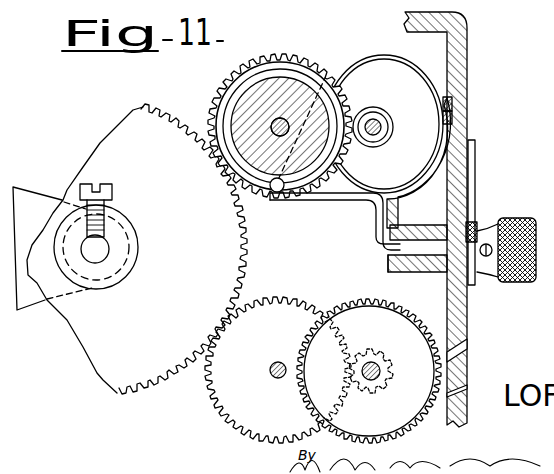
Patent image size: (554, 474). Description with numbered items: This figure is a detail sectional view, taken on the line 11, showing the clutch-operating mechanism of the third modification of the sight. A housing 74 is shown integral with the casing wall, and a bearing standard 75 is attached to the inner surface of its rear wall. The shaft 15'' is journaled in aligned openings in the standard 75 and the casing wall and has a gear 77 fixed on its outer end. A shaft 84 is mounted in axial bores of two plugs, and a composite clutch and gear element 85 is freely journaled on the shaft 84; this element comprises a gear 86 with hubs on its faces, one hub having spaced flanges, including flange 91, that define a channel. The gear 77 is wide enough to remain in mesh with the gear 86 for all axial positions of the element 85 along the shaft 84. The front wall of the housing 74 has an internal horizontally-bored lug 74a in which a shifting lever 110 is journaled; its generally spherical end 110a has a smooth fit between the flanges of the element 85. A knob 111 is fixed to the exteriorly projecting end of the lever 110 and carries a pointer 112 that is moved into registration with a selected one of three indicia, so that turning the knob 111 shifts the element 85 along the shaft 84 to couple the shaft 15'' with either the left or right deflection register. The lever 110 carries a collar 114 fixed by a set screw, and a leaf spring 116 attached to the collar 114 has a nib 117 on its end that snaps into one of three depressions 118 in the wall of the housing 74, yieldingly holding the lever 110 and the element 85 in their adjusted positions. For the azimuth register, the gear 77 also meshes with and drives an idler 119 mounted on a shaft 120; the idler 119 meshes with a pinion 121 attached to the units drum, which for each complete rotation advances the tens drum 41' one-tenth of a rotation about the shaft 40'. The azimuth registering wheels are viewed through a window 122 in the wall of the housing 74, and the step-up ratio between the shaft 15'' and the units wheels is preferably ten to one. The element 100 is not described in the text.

The section line 11 is at (372, 16).
The housing 74 is at (454, 219).
The internal horizontally-bored lug 74a is at (421, 272).
The bearing standard 75 is at (30, 197).
The gear 77 is at (147, 113).
The shaft 84 is at (277, 123).
The composite clutch and gear element 85 is at (283, 51).
The gear 86 is at (328, 72).
The flange 91 is at (247, 74).
The roller 100 is at (376, 119).
The shifting lever 110 is at (337, 200).
The spherical end 110a is at (269, 201).
The knob 111 is at (507, 219).
The pointer 112 is at (474, 186).
The collar 114 is at (388, 264).
The leaf spring 116 is at (408, 190).
The nib 117 is at (452, 112).
The depressions 118 is at (452, 122).
The idler 119 is at (223, 410).
The shaft 120 is at (273, 379).
The pinion 121 is at (374, 383).
The window 122 is at (458, 354).
The shaft 40' is at (268, 370).
The tens drum 41' is at (369, 381).
The shaft 15'' is at (96, 236).